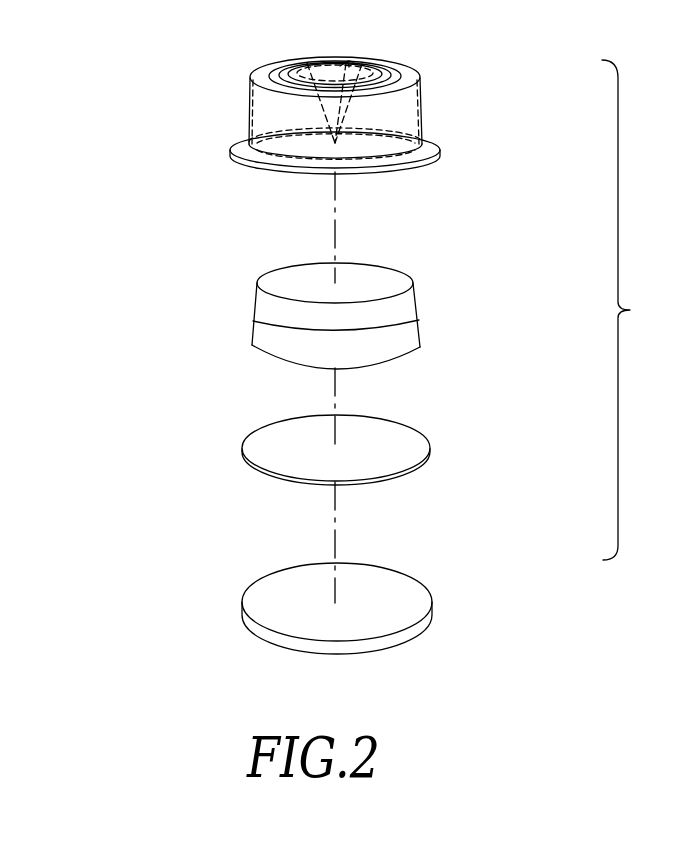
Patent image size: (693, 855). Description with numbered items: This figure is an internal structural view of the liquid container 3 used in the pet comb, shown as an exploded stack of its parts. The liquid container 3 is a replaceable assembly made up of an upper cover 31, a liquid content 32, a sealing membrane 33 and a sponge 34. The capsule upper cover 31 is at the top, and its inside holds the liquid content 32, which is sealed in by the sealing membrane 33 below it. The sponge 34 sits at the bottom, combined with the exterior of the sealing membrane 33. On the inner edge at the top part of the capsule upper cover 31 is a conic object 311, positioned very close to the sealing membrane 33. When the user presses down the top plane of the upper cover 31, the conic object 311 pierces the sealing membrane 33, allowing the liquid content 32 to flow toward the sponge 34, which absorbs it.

The liquid container 3 is at (626, 310).
The upper cover 31 is at (421, 104).
The conic object 311 is at (327, 110).
The liquid content 32 is at (418, 302).
The sealing membrane 33 is at (418, 443).
The sponge 34 is at (420, 598).